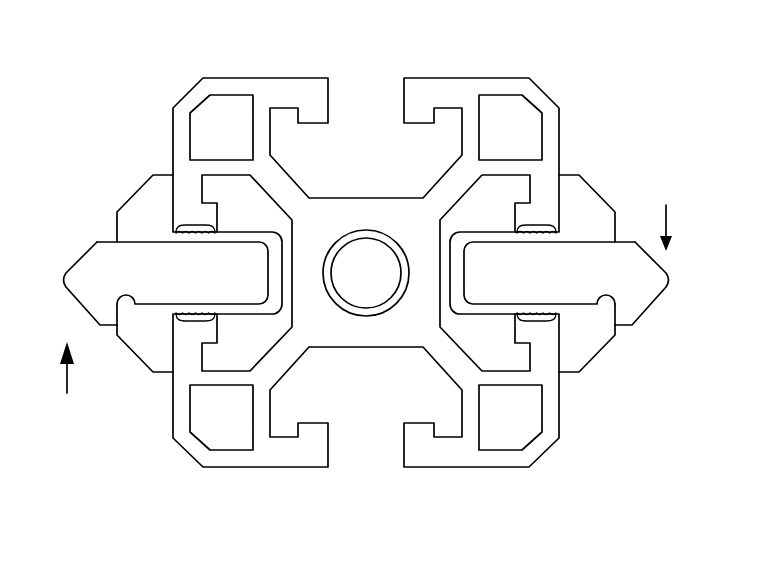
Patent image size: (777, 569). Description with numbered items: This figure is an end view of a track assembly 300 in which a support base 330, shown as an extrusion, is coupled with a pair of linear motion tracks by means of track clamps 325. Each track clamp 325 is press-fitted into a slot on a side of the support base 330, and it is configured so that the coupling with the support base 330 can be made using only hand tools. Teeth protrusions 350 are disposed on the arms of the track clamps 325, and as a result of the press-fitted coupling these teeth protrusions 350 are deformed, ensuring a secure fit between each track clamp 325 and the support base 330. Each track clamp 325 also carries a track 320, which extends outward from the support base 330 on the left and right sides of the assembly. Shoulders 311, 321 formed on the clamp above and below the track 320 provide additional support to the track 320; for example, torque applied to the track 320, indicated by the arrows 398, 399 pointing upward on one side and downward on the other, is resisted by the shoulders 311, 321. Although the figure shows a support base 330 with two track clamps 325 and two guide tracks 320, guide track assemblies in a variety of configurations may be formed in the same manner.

The track assembly 300 is at (101, 48).
The support base 330 is at (541, 90).
The track clamp 325 is at (393, 282).
The track 320 is at (66, 270).
The shoulder 311 is at (160, 236).
The shoulder 321 is at (160, 334).
The teeth protrusions 350 is at (200, 229).
The arrow 398 is at (65, 380).
The arrow 399 is at (668, 221).